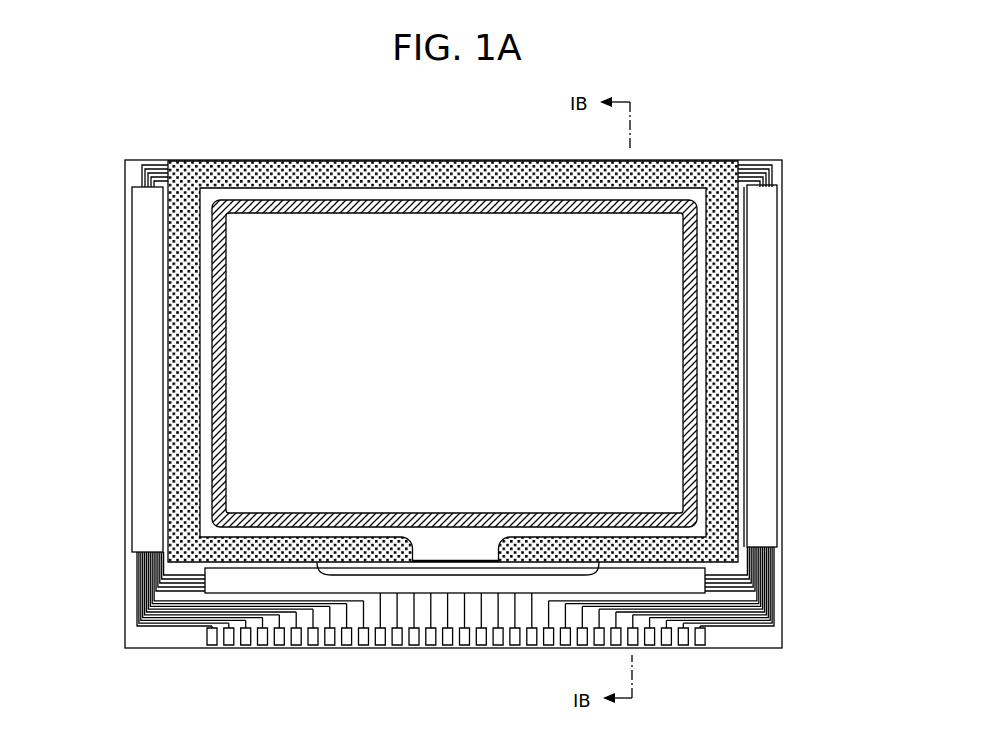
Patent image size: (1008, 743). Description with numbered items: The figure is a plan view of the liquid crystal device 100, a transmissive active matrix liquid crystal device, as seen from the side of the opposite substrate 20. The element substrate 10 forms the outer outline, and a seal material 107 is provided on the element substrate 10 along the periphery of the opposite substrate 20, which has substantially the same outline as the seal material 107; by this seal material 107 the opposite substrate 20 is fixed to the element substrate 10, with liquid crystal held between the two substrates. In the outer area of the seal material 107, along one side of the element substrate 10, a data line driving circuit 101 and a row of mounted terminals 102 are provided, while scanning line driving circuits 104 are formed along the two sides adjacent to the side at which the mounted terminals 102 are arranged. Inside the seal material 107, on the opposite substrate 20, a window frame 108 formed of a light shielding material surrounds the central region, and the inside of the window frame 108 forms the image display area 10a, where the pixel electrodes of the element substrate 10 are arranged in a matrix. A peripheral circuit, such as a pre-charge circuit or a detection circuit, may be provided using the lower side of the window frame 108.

The liquid crystal device 100 is at (745, 122).
The element substrate 10 is at (793, 489).
The image display area 10a is at (270, 306).
The opposite substrate 20 is at (755, 525).
The data line driving circuit 101 is at (249, 583).
The mounted terminals 102 is at (375, 630).
The scanning line driving circuits 104 is at (143, 377).
The seal material 107 is at (722, 352).
The window frame 108 is at (690, 272).